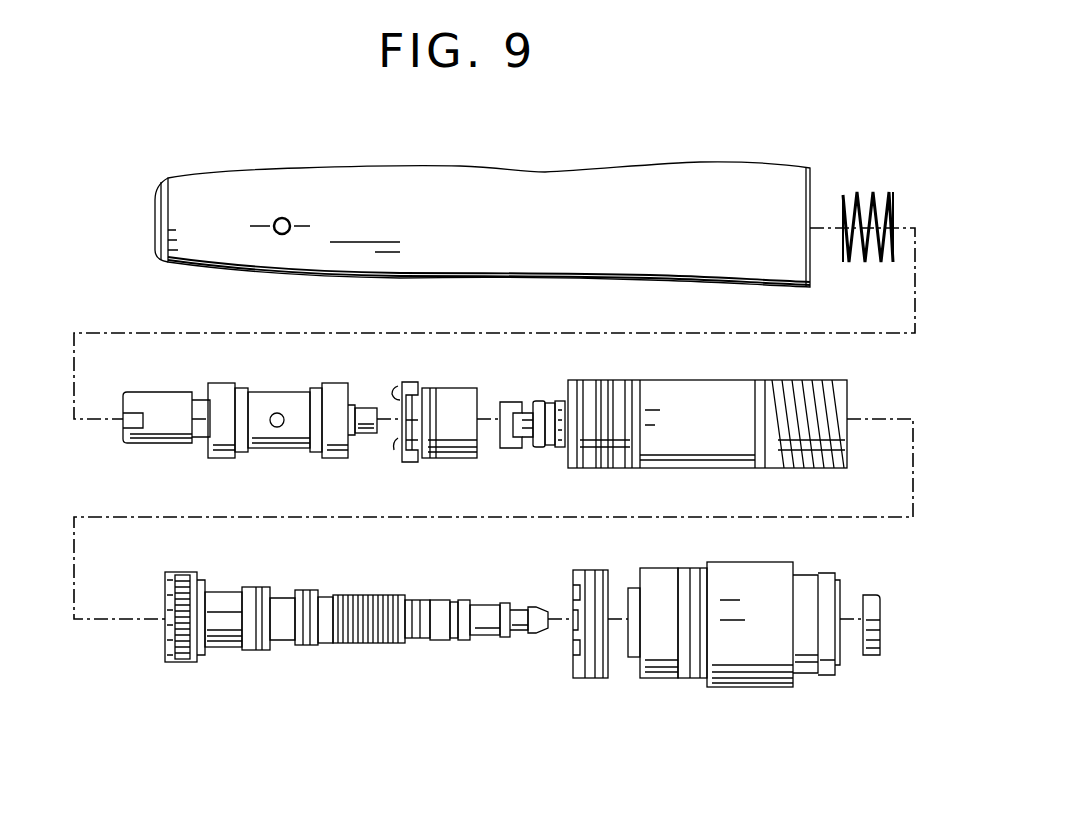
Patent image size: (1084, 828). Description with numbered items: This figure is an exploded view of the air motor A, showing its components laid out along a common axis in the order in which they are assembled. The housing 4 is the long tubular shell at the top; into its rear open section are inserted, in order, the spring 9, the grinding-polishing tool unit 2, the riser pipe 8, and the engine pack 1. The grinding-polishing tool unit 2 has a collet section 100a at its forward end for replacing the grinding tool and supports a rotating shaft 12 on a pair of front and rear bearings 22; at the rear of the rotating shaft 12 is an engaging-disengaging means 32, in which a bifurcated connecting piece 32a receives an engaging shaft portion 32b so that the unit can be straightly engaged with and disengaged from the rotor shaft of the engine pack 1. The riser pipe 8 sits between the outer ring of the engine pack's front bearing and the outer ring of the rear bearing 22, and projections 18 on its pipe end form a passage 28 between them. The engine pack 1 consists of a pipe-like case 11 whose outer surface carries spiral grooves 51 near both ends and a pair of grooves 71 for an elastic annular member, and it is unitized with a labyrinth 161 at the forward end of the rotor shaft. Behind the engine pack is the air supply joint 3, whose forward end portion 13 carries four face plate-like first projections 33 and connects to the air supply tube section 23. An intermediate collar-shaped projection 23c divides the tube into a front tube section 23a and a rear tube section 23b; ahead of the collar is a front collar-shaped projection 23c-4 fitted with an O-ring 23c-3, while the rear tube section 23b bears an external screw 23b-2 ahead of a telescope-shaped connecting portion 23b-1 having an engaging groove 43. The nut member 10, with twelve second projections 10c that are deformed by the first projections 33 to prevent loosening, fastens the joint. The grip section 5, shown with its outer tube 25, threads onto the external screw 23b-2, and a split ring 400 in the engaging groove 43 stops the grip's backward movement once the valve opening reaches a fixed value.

The air motor A is at (724, 160).
The housing 4 is at (490, 186).
The spring 9 is at (868, 192).
The collet section 100a is at (147, 398).
The front and rear bearings 22 is at (219, 396).
The grinding-polishing tool unit 2 is at (262, 396).
The rotating shaft 12 is at (290, 398).
The engaging shaft portion 32b is at (366, 406).
The passage 28 is at (410, 462).
The projections 18 is at (398, 404).
The riser pipe 8 is at (455, 400).
The engaging-disengaging means 32 is at (507, 400).
The bifurcated connecting piece 32a is at (505, 448).
The labyrinth 161 is at (548, 400).
The engine pack 1 is at (690, 468).
The pipe-like case 11 is at (700, 396).
The grooves 71 is at (645, 392).
The spiral grooves 51 is at (845, 386).
The forward end portion 13 is at (178, 580).
The first projections 33 is at (192, 592).
The air supply joint 3 is at (325, 596).
The air supply tube section 23 is at (362, 598).
The front tube section 23a is at (224, 645).
The intermediate collar-shaped projection 23c is at (300, 592).
The O-ring 23c-3 is at (260, 650).
The front collar-shaped projection 23c-4 is at (288, 645).
The rear tube section 23b is at (415, 600).
The external screw 23b-2 is at (412, 640).
The telescope-shaped connecting portion 23b-1 is at (505, 640).
The engaging groove 43 is at (462, 598).
The second projections 10c is at (573, 578).
The nut member 10 is at (628, 580).
The outer tube 25 is at (652, 665).
The grip section 5 is at (752, 665).
The split ring 400 is at (912, 592).